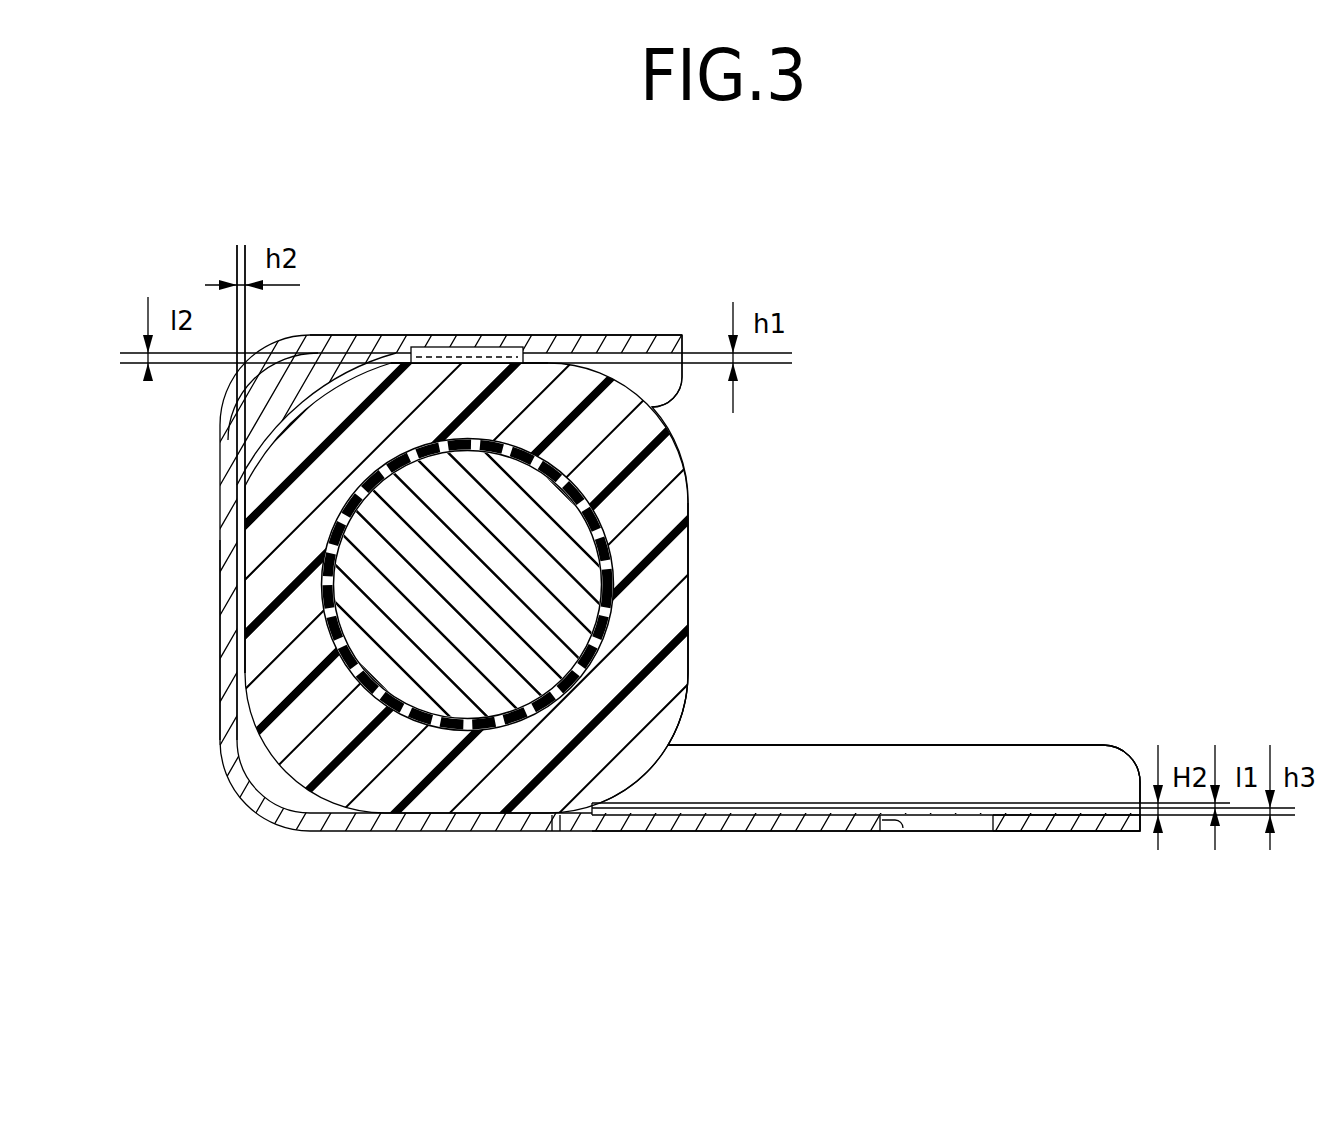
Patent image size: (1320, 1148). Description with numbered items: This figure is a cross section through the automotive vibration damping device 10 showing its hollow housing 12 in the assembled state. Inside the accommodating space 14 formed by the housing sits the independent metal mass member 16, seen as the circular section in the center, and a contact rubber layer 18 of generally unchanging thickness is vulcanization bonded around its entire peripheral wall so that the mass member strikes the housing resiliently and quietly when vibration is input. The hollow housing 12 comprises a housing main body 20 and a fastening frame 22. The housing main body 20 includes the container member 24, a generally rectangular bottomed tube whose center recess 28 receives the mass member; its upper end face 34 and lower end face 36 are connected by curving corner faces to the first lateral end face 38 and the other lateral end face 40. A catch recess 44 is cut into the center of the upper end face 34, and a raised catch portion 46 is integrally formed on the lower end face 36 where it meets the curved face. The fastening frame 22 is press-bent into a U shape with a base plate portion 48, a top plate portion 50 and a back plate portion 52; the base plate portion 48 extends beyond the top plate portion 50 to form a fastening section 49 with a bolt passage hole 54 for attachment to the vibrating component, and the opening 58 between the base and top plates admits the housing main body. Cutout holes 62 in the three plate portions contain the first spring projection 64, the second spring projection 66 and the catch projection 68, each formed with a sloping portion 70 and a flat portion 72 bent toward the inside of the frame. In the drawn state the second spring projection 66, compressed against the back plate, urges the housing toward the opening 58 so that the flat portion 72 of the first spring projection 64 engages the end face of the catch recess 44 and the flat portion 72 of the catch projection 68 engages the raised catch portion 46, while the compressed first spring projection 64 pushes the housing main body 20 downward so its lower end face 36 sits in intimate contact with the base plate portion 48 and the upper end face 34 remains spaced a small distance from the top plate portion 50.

The automotive vibration damping device 10 is at (200, 220).
The hollow housing 12 is at (190, 750).
The accommodating space 14 is at (357, 700).
The mass member 16 is at (565, 540).
The contact rubber layer 18 is at (610, 623).
The housing main body 20 is at (648, 347).
The fastening frame 22 is at (782, 846).
The container member 24 is at (658, 680).
The center recess 28 is at (600, 500).
The upper end face 34 is at (398, 343).
The lower end face 36 is at (470, 832).
The first lateral end face 38 is at (230, 655).
The another lateral end face 40 is at (690, 548).
The catch recess 44 is at (512, 347).
The raised catch portion 46 is at (603, 815).
The base plate portion 48 is at (410, 832).
The fastening section 49 is at (1020, 827).
The top plate portion 50 is at (614, 345).
The back plate portion 52 is at (226, 465).
The bolt passage hole 54 is at (913, 833).
The opening 58 is at (708, 770).
The cutout hole 62 is at (383, 335).
The first spring projection 64 is at (502, 272).
The second spring projection 66 is at (160, 557).
The catch projection 68 is at (690, 903).
The sloping portion 70 is at (492, 352).
The flat portion 72 is at (462, 352).